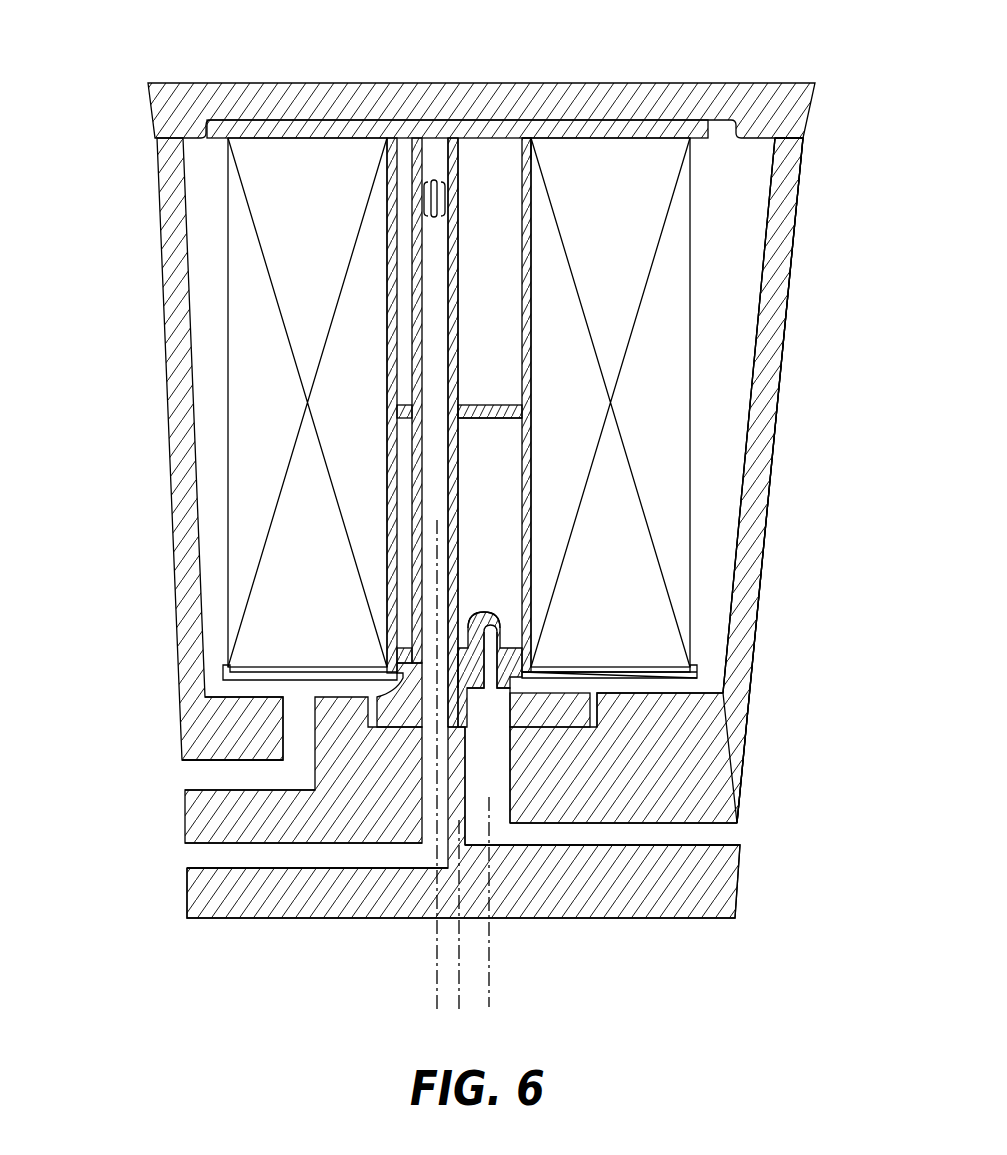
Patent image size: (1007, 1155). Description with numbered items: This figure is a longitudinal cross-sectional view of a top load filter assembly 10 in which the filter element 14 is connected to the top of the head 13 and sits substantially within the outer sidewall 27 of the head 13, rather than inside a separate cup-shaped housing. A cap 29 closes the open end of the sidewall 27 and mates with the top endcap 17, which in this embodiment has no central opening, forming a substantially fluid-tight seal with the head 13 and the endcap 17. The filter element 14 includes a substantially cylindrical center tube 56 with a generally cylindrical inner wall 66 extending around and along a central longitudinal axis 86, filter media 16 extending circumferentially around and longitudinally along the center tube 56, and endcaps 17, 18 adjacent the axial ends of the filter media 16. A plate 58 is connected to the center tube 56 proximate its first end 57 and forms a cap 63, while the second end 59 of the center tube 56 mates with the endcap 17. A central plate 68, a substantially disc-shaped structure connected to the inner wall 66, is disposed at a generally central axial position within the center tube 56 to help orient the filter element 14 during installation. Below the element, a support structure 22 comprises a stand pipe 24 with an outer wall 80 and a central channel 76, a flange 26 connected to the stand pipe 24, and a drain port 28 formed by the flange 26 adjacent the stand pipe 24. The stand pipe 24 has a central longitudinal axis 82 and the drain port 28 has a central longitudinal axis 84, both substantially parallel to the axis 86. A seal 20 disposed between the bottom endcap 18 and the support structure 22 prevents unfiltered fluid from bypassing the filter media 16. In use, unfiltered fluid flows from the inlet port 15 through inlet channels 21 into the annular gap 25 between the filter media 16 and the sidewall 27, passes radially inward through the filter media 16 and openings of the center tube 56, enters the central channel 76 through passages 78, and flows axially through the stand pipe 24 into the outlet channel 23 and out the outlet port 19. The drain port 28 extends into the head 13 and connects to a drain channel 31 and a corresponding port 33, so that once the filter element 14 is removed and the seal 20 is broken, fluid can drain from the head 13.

The filter assembly 10 is at (86, 73).
The head 13 is at (746, 762).
The filter element 14 is at (742, 206).
The inlet port 15 is at (186, 772).
The filter media 16 is at (315, 519).
The endcap 17 is at (711, 128).
The endcap 18 is at (700, 668).
The outlet port 19 is at (187, 862).
The sealing structure 20 is at (398, 690).
The inlet channels 21 is at (313, 746).
The support structure 22 is at (606, 690).
The outlet channel 23 is at (309, 870).
The stand pipe 24 is at (459, 257).
The annular gap 25 is at (735, 345).
The flange 26 is at (548, 692).
The sidewall 27 is at (770, 440).
The drain port 28 is at (492, 712).
The cap 29 is at (650, 82).
The drain channel 31 is at (547, 836).
The port 33 is at (736, 832).
The center tube 56 is at (533, 422).
The first end 57 is at (548, 664).
The plate 58 is at (498, 655).
The second end 59 is at (546, 147).
The cap 63 is at (470, 608).
The inner wall 66 is at (518, 387).
The central plate 68 is at (492, 420).
The central channel 76 is at (444, 364).
The passages 78 is at (437, 222).
The outer wall 80 is at (458, 323).
The central longitudinal axis 82 is at (437, 968).
The central longitudinal axis 84 is at (490, 958).
The central longitudinal axis 86 is at (459, 992).